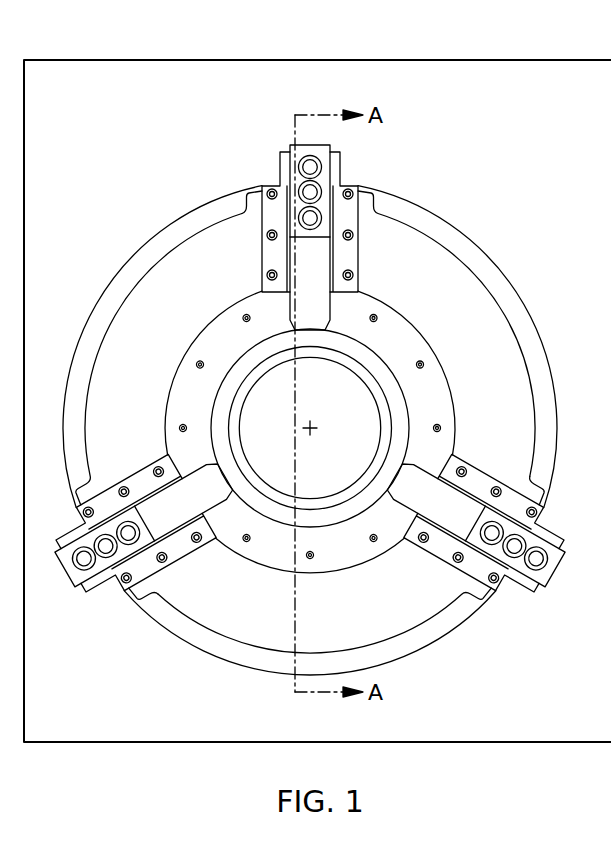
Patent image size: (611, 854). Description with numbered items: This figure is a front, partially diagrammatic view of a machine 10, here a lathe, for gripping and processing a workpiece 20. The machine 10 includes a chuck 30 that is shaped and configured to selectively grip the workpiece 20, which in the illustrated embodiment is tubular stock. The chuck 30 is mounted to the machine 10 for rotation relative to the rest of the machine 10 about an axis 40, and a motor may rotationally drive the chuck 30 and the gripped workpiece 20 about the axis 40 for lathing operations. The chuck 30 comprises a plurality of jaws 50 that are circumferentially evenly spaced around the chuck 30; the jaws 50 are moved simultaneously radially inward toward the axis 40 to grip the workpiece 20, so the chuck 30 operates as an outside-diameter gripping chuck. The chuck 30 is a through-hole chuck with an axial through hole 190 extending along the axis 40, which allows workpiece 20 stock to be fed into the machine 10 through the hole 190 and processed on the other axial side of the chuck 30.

The machine 10 is at (320, 60).
The workpiece 20 is at (360, 382).
The chuck 30 is at (443, 218).
The axis 40 is at (312, 424).
The jaws 50 is at (327, 163).
The axial through hole 190 is at (311, 470).